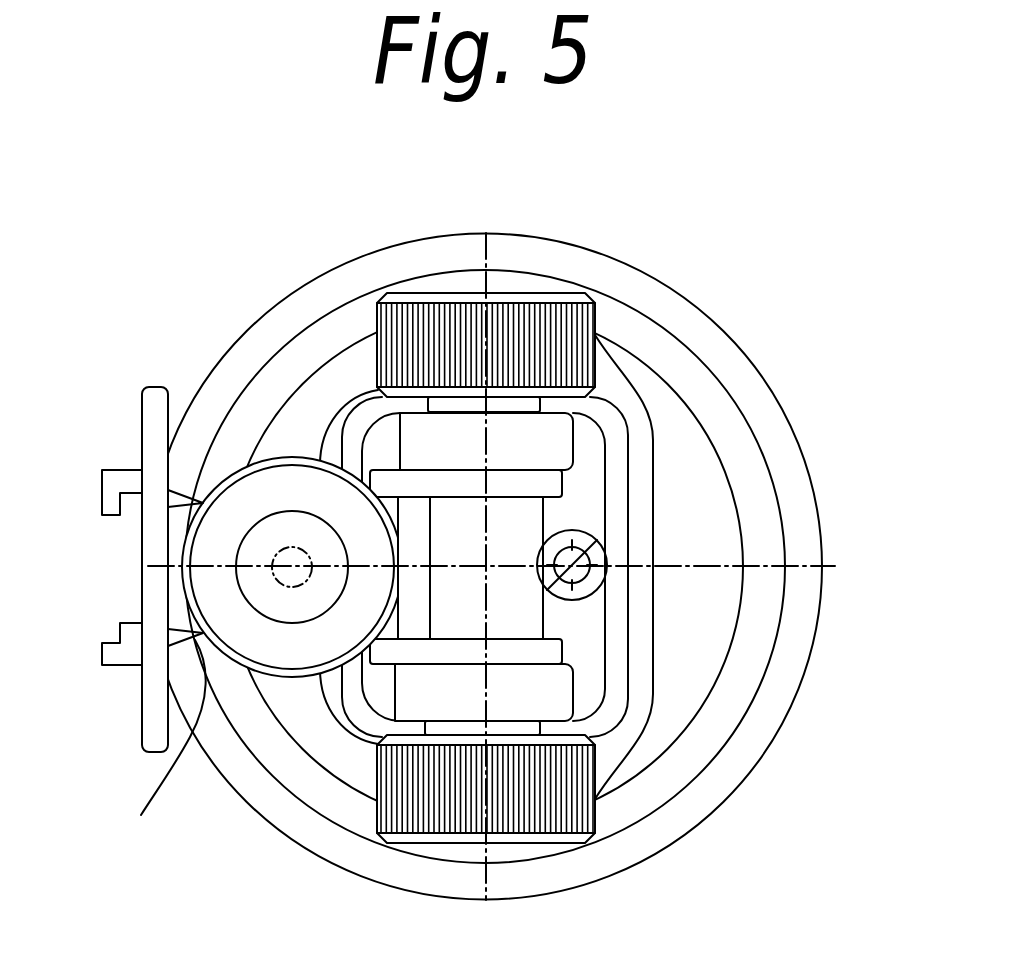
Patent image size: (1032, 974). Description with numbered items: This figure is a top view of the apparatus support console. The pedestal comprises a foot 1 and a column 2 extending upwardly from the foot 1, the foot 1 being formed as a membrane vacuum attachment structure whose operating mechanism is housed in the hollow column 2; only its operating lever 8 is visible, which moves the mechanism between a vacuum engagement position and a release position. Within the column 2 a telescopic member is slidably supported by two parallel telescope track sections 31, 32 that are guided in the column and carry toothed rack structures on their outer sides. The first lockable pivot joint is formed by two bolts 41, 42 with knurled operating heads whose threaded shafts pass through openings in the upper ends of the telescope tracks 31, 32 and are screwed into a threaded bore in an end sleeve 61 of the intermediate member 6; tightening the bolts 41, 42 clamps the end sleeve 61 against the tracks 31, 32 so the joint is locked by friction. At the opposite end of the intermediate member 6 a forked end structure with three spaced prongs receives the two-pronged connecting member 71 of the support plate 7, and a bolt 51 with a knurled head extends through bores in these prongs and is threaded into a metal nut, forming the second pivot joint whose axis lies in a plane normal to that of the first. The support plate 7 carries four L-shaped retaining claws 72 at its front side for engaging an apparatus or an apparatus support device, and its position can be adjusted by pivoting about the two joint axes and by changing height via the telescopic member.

The foot 1 is at (698, 463).
The column 2 is at (592, 630).
The intermediate member 6 is at (393, 645).
The support plate 7 is at (148, 425).
The operating lever 8 is at (141, 815).
The telescope track section 31 is at (520, 697).
The telescope track section 32 is at (545, 442).
The bolt 41 is at (555, 798).
The bolt 42 is at (563, 330).
The bolt 51 is at (278, 643).
The end sleeve 61 is at (502, 520).
The two-pronged connecting member 71 is at (180, 615).
The L-shaped retaining claws 72 is at (110, 498).